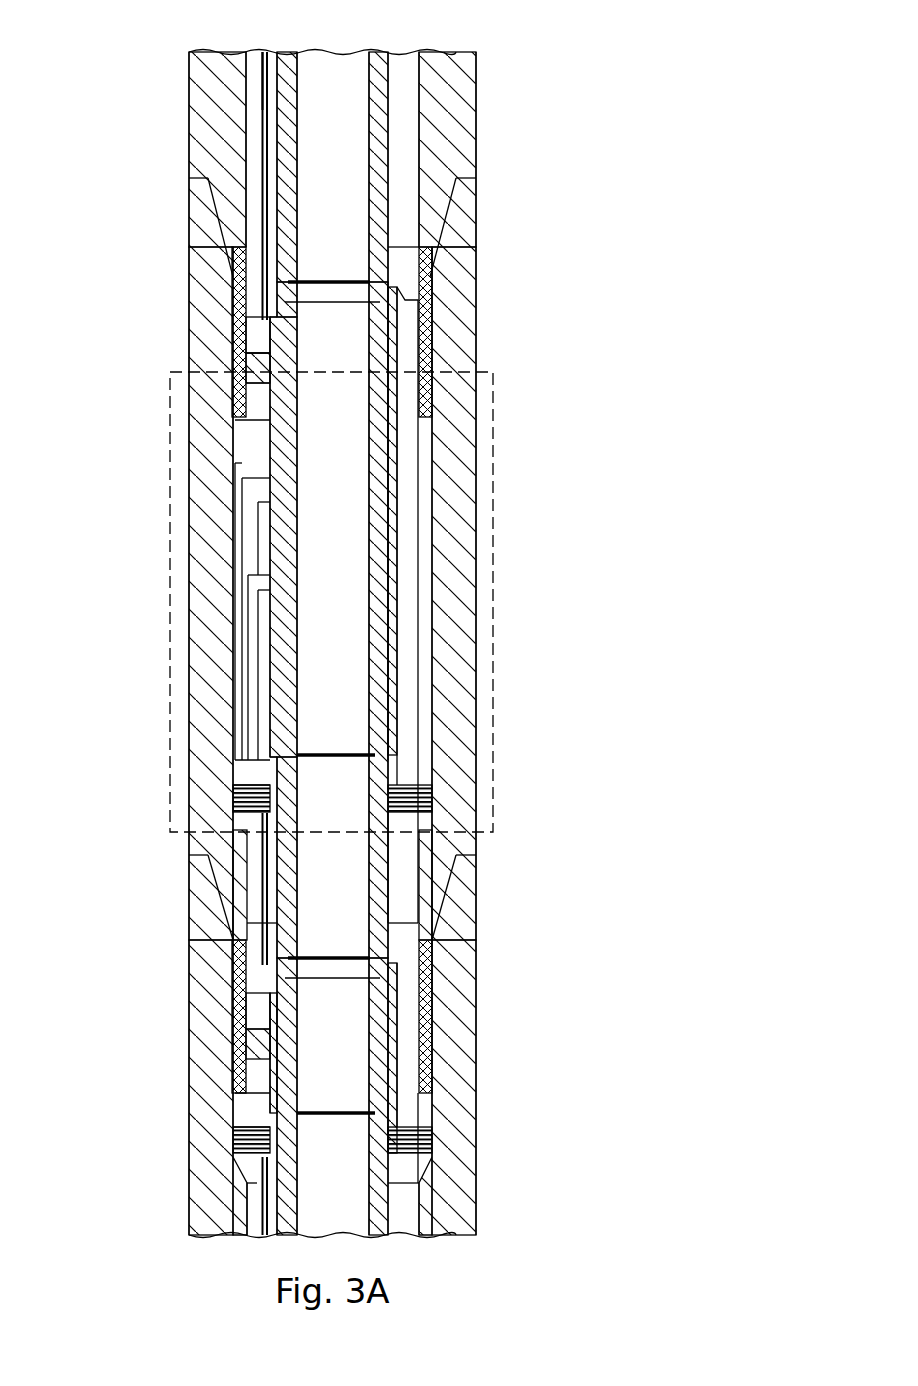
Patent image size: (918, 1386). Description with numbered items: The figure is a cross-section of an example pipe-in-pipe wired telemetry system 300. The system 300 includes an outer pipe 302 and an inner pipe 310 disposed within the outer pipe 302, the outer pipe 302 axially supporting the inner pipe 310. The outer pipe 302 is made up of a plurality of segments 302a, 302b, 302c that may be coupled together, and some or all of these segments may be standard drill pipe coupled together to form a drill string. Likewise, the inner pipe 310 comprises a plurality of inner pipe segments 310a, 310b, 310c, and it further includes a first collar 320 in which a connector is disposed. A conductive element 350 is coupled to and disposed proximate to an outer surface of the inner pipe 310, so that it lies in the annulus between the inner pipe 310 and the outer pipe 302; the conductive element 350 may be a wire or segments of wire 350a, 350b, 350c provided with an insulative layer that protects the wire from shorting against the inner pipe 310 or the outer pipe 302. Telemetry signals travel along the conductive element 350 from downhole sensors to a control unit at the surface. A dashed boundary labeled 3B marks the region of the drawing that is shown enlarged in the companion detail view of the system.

The pipe-in-pipe telemetry system 300 is at (645, 81).
The outer pipe 302 is at (477, 213).
The outer pipe segment 302a is at (477, 102).
The outer pipe segment 302b is at (477, 351).
The outer pipe segment 302c is at (477, 1078).
The inner pipe 310 is at (408, 287).
The inner pipe segment 310a is at (400, 134).
The inner pipe segment 310b is at (390, 862).
The inner pipe segment 310c is at (390, 1198).
The first collar 320 is at (242, 325).
The conductive element 350 is at (262, 127).
The wire segment 350a is at (263, 83).
The wire segment 350b is at (260, 848).
The lower control line section 350c is at (262, 1197).
The detail view region 3B is at (493, 440).